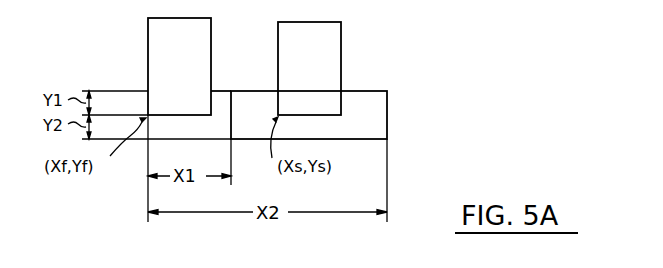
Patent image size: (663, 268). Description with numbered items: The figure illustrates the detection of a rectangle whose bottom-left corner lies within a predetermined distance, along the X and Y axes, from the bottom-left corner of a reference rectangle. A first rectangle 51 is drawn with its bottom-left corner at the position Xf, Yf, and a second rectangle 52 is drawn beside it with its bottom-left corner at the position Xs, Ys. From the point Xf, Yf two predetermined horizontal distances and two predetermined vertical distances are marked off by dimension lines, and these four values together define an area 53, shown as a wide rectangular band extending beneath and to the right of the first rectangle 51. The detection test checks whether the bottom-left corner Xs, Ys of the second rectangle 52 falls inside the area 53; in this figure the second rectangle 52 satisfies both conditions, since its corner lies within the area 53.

The first rectangle 51 is at (213, 38).
The second rectangle 52 is at (341, 41).
The area 53 is at (387, 114).